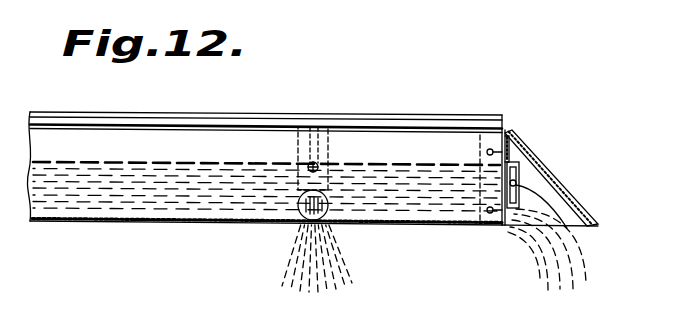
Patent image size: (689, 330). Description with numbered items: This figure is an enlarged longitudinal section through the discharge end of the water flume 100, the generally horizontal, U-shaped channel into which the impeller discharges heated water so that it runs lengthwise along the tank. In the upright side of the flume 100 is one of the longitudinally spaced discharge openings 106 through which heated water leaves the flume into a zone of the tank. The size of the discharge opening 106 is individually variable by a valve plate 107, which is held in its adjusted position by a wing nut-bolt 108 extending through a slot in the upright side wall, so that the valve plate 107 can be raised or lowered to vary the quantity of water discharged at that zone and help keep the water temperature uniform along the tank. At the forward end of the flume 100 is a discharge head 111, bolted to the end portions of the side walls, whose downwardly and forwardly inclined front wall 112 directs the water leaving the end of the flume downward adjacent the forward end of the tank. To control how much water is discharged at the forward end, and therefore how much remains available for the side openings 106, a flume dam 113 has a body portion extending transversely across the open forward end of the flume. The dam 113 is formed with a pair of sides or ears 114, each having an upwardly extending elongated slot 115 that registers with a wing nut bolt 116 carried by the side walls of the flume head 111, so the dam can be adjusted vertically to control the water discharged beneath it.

The water flume 100 is at (238, 145).
The discharge openings 106 is at (299, 197).
The valve plate 107 is at (330, 150).
The wing nut-bolt 108 is at (331, 127).
The discharge head 111 is at (546, 175).
The front wall 112 is at (575, 198).
The flume dam 113 is at (488, 156).
The sides or ears 114 is at (513, 163).
The elongated slot 115 is at (506, 227).
The wing nut bolt 116 is at (567, 228).